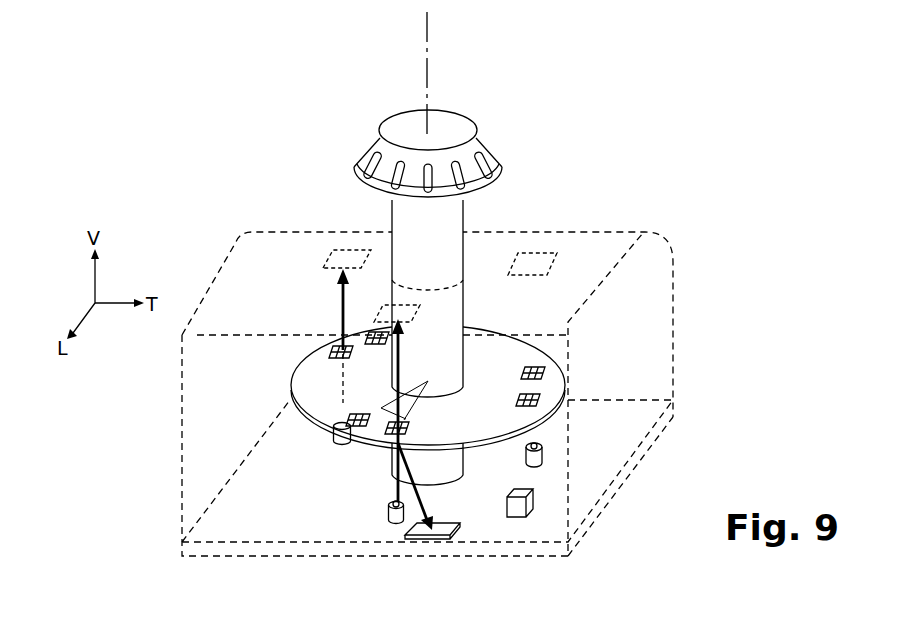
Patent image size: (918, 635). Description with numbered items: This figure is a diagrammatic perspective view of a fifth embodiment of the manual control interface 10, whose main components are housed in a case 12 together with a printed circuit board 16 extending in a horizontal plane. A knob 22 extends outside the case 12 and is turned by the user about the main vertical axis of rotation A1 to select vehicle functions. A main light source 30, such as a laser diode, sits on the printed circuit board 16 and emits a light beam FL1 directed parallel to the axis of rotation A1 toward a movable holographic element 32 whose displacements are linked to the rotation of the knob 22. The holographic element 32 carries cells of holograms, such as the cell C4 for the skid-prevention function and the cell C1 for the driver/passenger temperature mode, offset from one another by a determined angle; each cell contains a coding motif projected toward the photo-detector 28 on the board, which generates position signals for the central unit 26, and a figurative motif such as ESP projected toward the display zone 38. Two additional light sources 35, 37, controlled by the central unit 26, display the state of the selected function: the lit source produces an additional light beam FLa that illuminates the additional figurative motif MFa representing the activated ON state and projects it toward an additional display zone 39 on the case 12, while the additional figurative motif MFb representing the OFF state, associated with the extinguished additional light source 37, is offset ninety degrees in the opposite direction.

The manual control interface 10 is at (252, 199).
The case 12 is at (678, 287).
The printed circuit board 16 is at (661, 444).
The knob 22 is at (481, 148).
The central unit 26 is at (530, 500).
The photo-detector 28 is at (458, 525).
The light source 30 is at (390, 508).
The movable holographic element 32 is at (558, 418).
The additional light source 35 is at (352, 421).
The additional light source 37 is at (542, 454).
The display zone 38 is at (386, 304).
The additional display zone 39 is at (345, 250).
The main vertical axis of rotation A1 is at (427, 43).
The additional figurative motif MFa is at (330, 350).
The additional figurative motif MFb is at (538, 367).
The additional light beam FLa is at (343, 373).
The light beam FL1 is at (390, 463).
The cell C1 is at (333, 430).
The cell C4 is at (400, 430).